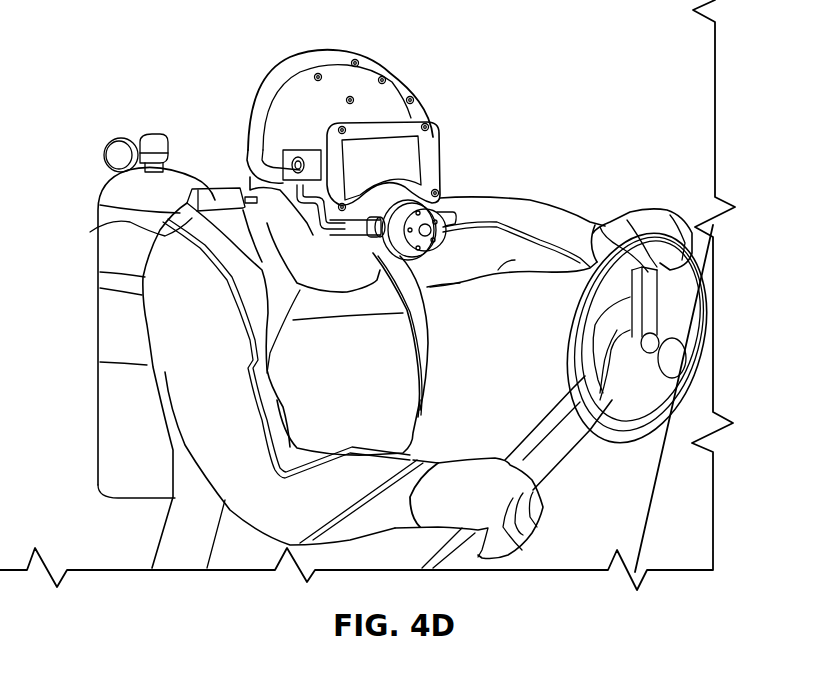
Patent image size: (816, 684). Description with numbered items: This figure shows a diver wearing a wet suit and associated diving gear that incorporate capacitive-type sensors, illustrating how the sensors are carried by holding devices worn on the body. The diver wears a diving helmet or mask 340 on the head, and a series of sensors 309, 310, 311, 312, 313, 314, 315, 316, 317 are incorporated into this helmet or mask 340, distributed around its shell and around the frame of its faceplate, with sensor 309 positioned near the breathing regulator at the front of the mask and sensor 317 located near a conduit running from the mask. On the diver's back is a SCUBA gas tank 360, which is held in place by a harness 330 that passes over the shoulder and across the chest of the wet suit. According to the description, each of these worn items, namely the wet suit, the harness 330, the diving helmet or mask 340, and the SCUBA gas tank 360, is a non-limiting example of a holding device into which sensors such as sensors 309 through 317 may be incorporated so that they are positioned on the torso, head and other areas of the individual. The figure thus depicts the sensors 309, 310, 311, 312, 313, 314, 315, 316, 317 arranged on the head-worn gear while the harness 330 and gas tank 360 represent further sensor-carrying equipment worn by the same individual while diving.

The sensor 309 is at (438, 187).
The sensor 310 is at (313, 73).
The sensor 311 is at (357, 62).
The sensor 312 is at (345, 100).
The sensor 313 is at (383, 78).
The sensor 314 is at (413, 97).
The sensor 315 is at (428, 125).
The sensor 316 is at (340, 132).
The sensor 317 is at (317, 235).
The harness 330 is at (107, 225).
The diving helmet or mask 340 is at (430, 127).
The SCUBA gas tank 360 is at (117, 438).